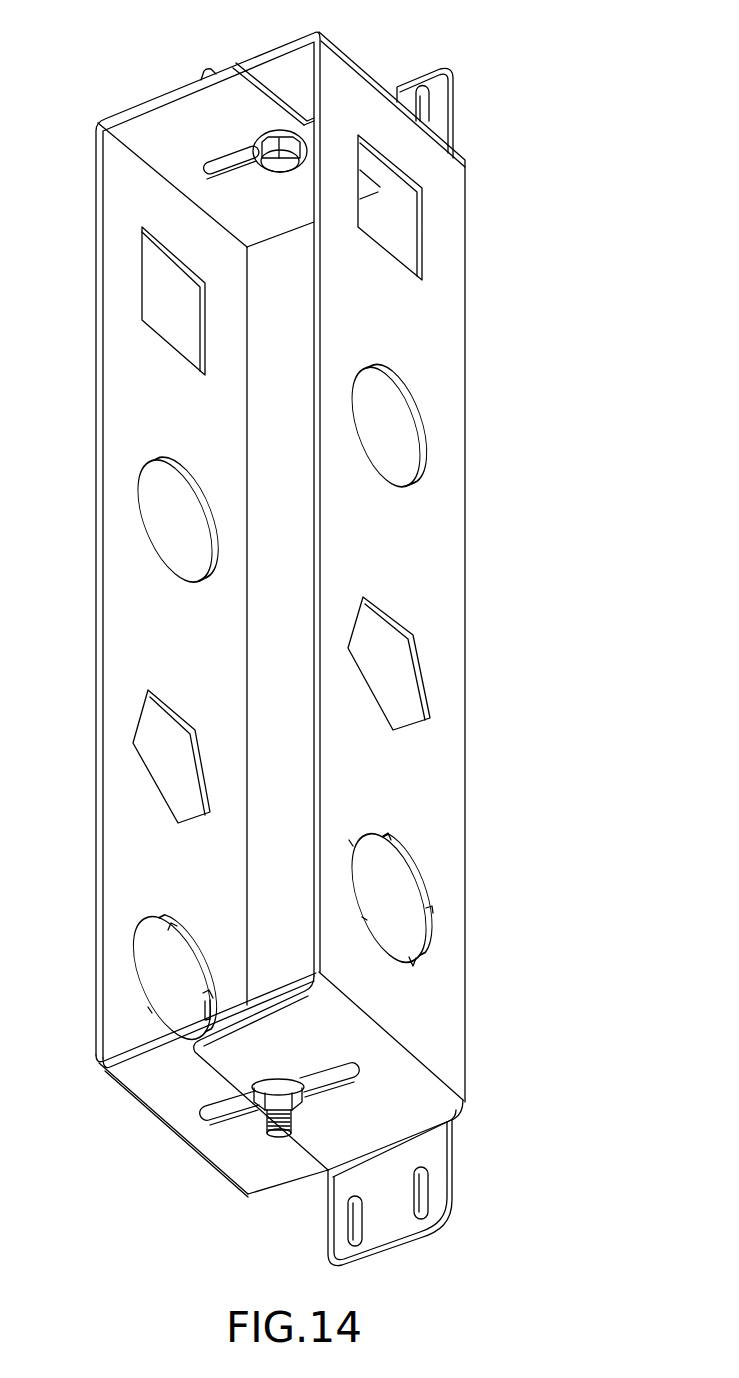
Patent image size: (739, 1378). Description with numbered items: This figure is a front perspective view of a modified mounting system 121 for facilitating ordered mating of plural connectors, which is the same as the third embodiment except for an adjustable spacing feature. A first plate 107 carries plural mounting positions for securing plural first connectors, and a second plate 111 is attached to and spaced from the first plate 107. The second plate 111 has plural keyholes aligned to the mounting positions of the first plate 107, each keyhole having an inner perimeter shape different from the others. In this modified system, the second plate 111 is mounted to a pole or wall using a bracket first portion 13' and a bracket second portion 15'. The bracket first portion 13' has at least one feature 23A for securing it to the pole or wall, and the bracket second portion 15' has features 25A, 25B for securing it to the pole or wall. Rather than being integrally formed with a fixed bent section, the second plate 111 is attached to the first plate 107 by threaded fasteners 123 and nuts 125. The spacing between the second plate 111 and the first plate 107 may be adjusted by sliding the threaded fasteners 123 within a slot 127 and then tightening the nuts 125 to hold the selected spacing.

The modified mounting system 121 is at (542, 238).
The first plate 107 is at (148, 625).
The second plate 111 is at (428, 532).
The threaded fastener 123 is at (263, 131).
The nut 125 is at (296, 1098).
The slot 127 is at (213, 158).
The bracket first portion 13' is at (410, 86).
The bracket second portion 15' is at (363, 1121).
The feature for securing the bracket first portion 23A is at (430, 108).
The feature for securing the bracket second portion 25A is at (350, 1227).
The feature for securing the bracket second portion 25B is at (427, 1190).